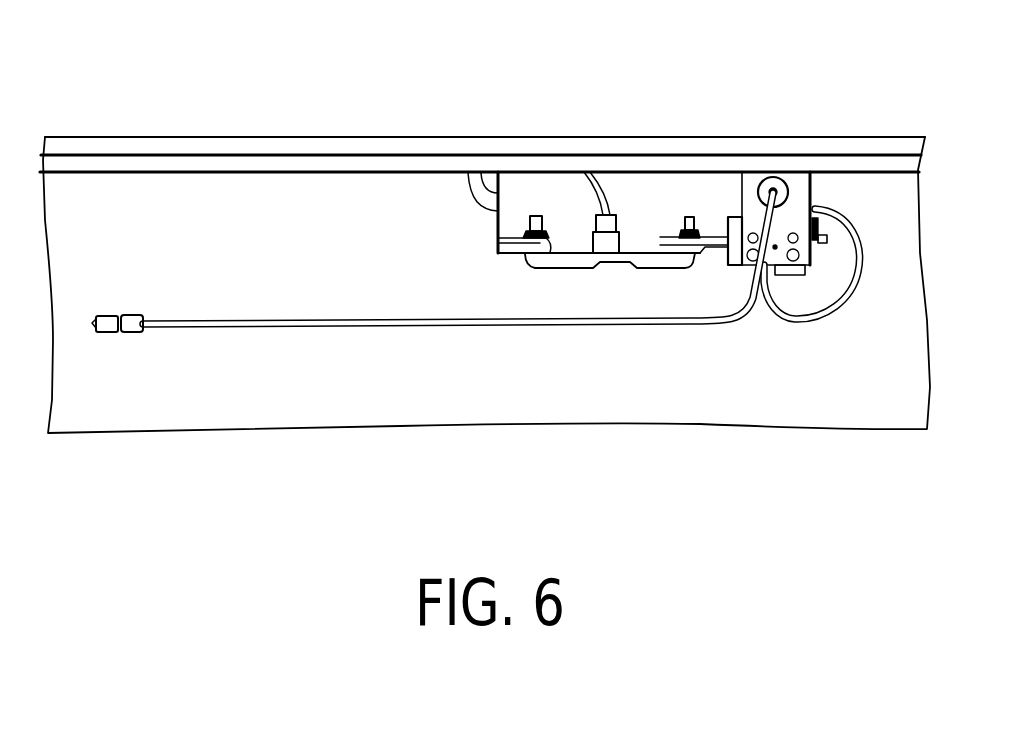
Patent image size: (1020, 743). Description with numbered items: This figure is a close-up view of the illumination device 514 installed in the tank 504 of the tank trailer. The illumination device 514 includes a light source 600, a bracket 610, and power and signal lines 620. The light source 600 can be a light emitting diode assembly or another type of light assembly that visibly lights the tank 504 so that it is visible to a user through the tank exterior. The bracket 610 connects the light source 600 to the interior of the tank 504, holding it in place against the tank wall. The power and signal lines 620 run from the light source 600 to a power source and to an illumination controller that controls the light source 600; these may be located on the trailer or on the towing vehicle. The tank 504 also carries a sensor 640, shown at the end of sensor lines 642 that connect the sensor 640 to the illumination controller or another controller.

The tank 504 is at (854, 393).
The illumination device 514 is at (825, 122).
The light source 600 is at (637, 264).
The bracket 610 is at (702, 188).
The power and signal lines 620 is at (468, 173).
The sensor 640 is at (107, 330).
The sensor lines 642 is at (520, 323).